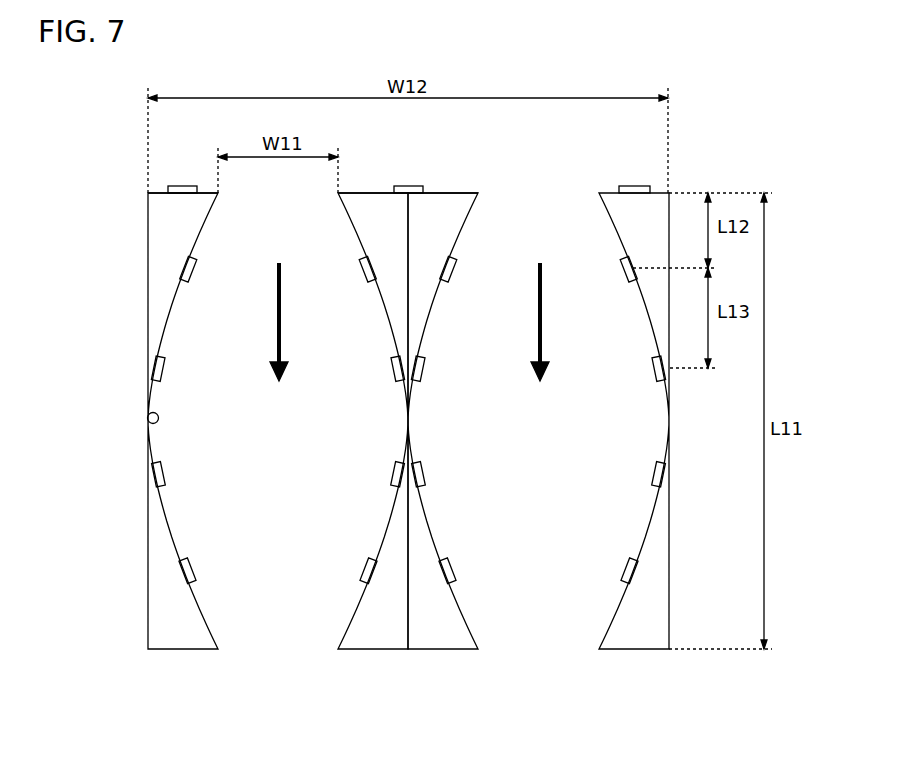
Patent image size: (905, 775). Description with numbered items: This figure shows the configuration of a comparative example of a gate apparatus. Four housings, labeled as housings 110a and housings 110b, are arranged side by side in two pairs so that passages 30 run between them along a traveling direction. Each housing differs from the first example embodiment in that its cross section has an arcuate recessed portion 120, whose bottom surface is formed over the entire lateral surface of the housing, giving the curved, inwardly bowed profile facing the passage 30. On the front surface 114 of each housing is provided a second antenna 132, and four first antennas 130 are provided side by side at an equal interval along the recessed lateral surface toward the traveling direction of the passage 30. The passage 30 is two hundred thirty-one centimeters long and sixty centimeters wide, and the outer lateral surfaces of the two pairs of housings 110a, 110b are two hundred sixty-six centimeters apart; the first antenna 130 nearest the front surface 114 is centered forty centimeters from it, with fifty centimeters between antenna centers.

The housing 110a is at (183, 650).
The housing 110b is at (373, 650).
The front surface 114 is at (207, 192).
The recessed portion 120 is at (150, 423).
The first antenna 130 is at (197, 274).
The second antenna 132 is at (176, 185).
The passage 30 is at (276, 600).